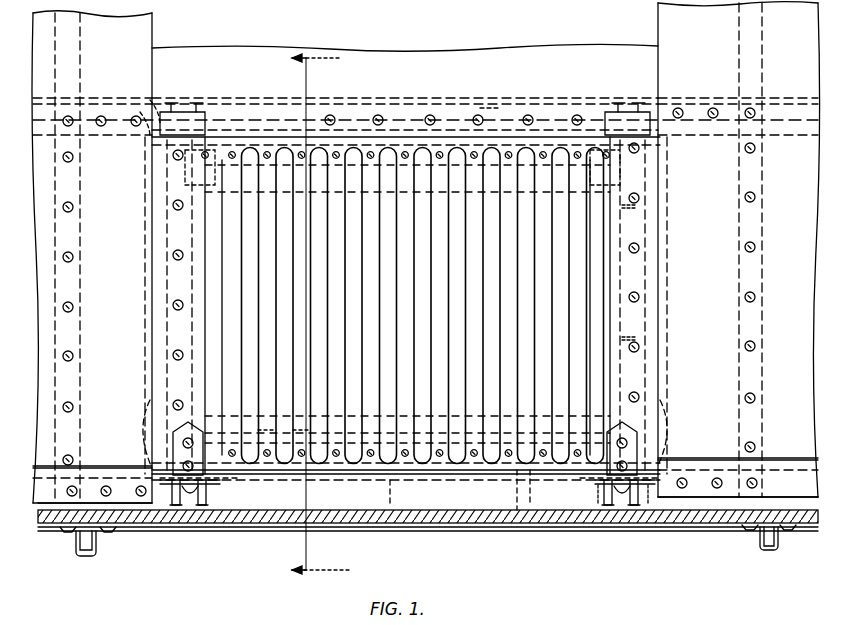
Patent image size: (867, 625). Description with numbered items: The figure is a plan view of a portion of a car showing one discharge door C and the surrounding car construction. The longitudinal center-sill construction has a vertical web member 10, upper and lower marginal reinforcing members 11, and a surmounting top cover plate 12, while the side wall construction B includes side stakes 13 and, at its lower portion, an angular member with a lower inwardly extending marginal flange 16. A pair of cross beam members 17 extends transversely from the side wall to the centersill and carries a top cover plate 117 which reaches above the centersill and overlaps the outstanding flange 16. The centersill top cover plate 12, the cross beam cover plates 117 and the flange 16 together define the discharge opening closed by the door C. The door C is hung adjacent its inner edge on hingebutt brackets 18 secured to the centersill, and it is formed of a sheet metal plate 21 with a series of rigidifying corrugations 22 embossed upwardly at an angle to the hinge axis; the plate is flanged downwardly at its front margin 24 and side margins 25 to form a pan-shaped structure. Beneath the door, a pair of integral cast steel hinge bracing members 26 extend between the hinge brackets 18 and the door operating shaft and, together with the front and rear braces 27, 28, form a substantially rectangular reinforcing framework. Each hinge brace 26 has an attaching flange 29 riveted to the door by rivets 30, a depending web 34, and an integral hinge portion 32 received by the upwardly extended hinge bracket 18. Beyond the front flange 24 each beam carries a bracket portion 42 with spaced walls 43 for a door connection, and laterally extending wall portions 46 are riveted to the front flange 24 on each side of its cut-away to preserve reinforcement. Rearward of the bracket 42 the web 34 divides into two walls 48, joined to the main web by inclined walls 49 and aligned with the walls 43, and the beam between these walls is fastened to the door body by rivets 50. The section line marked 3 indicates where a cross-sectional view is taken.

The vertical web member 10 is at (292, 45).
The marginal reinforcing members 11 is at (110, 135).
The top cover plate 12 is at (425, 87).
The side stakes 13 is at (92, 558).
The lower inwardly extending marginal flange 16 is at (521, 470).
The cross beam members 17 is at (55, 245).
The top cover plate 117 is at (153, 28).
The hingebutt brackets 18 is at (240, 100).
The sheet metal plate 21 is at (445, 462).
The rigidifying corrugations 22 is at (463, 420).
The front marginal flange 24 is at (390, 505).
The side marginal flanges 25 is at (150, 510).
The hinge bracing members 26 is at (160, 347).
The front brace 27 is at (483, 142).
The rear brace 28 is at (528, 480).
The attaching flange 29 is at (648, 380).
The rivets 30 is at (658, 195).
The hinge portion 32 is at (168, 100).
The depending web 34 is at (150, 438).
The bracket portion 42 is at (210, 505).
The spaced walls 43 is at (177, 505).
The laterally extending wall portions 46 is at (596, 528).
The walls 48 is at (170, 527).
The inclined walls 49 is at (153, 430).
The rivets 50 is at (36, 470).
The section line 3- 3 is at (328, 318).
The side wall construction B is at (272, 522).
The discharge door C is at (440, 400).